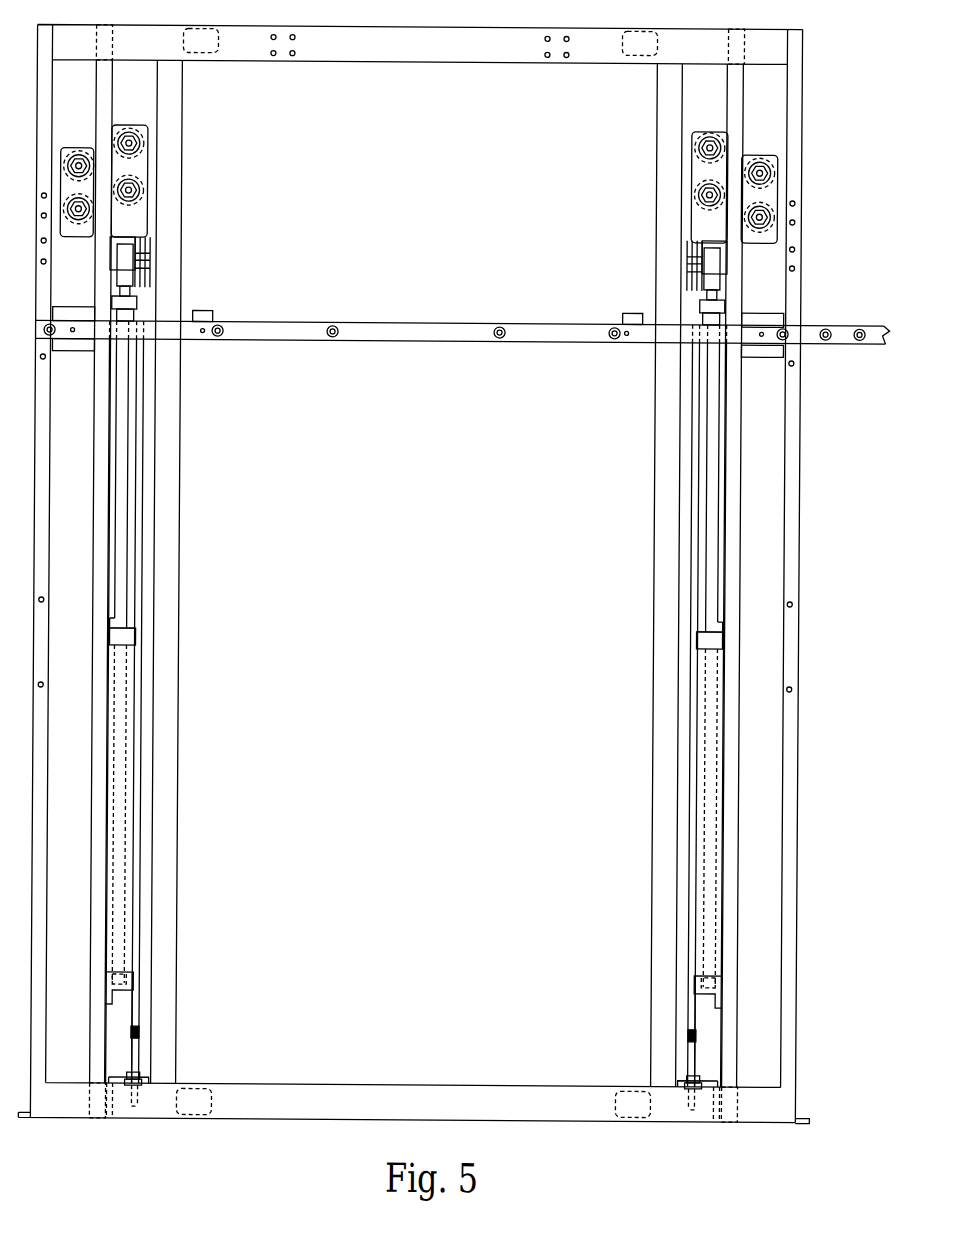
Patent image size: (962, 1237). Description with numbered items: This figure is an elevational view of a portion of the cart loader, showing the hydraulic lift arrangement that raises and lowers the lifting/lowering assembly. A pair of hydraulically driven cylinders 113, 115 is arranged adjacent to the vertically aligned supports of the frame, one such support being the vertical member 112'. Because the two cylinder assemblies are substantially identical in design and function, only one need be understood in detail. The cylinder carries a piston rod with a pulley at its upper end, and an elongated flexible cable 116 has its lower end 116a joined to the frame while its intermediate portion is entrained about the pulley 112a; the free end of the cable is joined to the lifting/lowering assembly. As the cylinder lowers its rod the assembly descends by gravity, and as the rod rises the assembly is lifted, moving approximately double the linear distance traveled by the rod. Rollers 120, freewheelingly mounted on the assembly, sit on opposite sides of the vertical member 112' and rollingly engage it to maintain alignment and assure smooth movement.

The vertical member 112' is at (801, 576).
The pulley 112a is at (150, 241).
The hydraulically driven cylinder 113 is at (708, 860).
The hydraulically driven cylinder 115 is at (137, 836).
The elongated flexible cable 116 is at (692, 1004).
The lower end of flexible cable 116a is at (692, 1072).
The rollers 120 is at (84, 216).